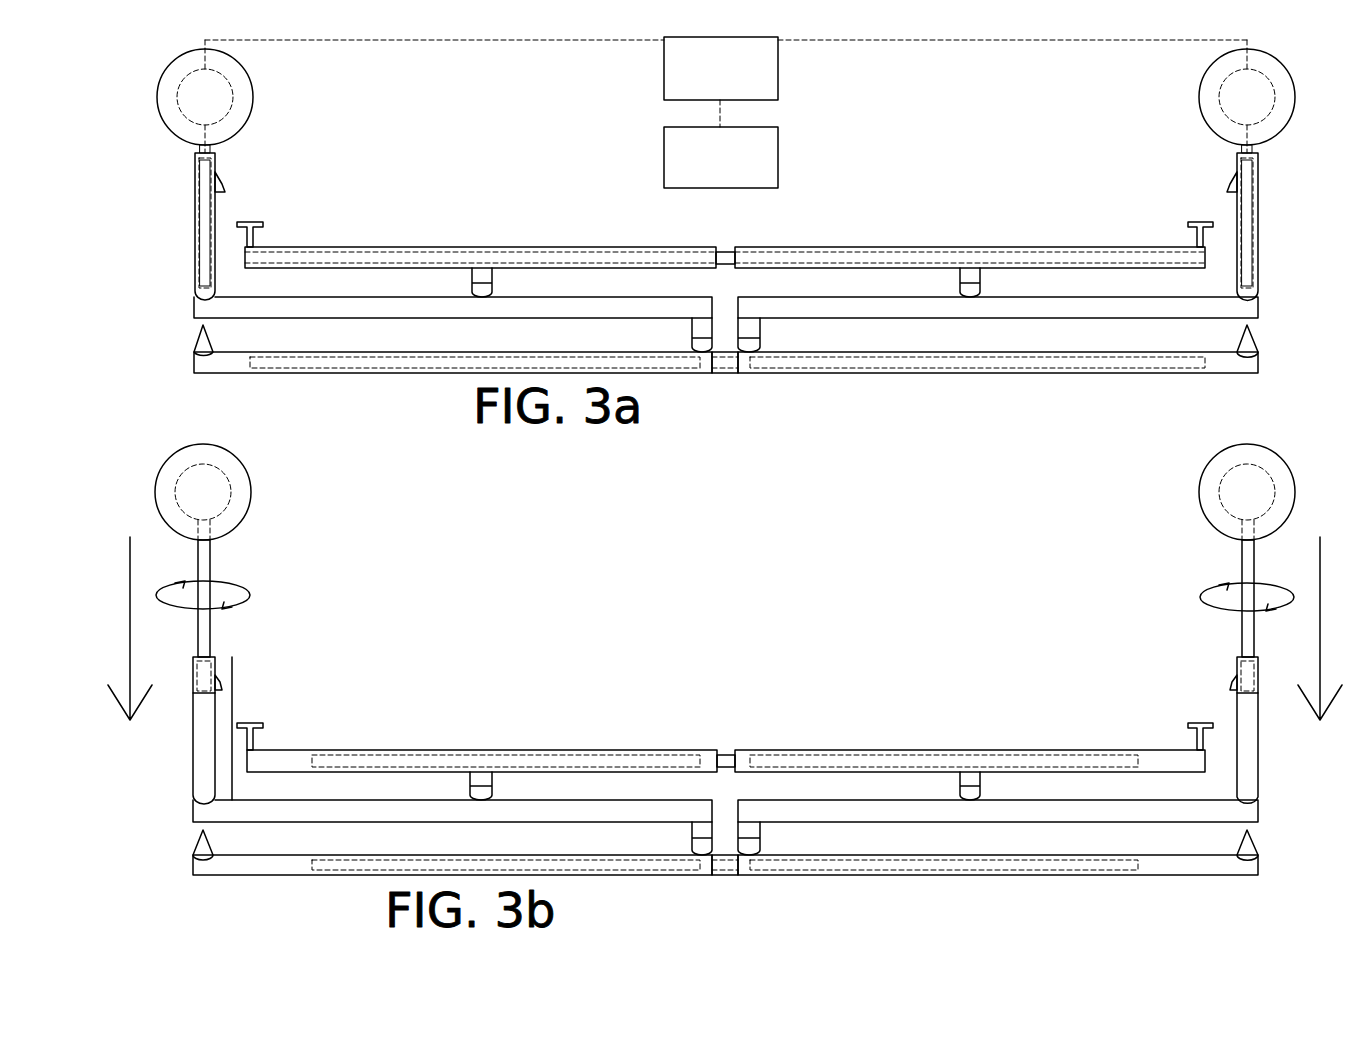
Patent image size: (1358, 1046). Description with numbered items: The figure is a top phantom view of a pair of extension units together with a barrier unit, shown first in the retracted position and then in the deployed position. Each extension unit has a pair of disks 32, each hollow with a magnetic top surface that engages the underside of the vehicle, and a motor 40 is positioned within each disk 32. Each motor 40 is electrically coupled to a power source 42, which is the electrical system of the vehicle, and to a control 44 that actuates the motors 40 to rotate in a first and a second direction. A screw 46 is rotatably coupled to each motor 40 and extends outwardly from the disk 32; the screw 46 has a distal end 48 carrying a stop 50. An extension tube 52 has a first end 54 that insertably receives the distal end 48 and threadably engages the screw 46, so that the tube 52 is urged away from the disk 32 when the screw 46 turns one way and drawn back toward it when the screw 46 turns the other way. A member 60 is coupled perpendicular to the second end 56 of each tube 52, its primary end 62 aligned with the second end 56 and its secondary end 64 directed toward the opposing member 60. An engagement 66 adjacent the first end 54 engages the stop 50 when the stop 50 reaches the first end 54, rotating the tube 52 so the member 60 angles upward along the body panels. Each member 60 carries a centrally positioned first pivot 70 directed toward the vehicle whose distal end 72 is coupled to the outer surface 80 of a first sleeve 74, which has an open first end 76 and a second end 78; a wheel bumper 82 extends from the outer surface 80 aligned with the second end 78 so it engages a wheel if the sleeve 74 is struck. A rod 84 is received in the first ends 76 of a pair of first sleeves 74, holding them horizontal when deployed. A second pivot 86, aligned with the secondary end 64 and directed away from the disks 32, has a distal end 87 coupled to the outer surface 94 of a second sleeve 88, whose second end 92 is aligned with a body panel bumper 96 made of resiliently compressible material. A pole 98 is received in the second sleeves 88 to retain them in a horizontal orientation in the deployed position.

In FIG. 3A, the disk 32 is at (250, 115).
In FIG. 3B, the disk 32 is at (250, 510).
In FIG. 3A, the motor 40 is at (175, 97).
In FIG. 3B, the motor 40 is at (175, 492).
In FIG. 3A, the power source 42 is at (664, 82).
In FIG. 3A, the control 44 is at (778, 150).
In FIG. 3A, the screw 46 is at (200, 228).
In FIG. 3B, the screw 46 is at (210, 565).
In FIG. 3B, the distal end 48 is at (210, 700).
In FIG. 3B, the stop 50 is at (200, 678).
In FIG. 3A, the extension tube 52 is at (195, 270).
In FIG. 3B, the extension tube 52 is at (193, 778).
In FIG. 3B, the first end 54 is at (210, 655).
In FIG. 3B, the second end 56 is at (215, 805).
In FIG. 3A, the member 60 is at (300, 297).
In FIG. 3B, the member 60 is at (262, 822).
In FIG. 3A, the primary end 62 is at (194, 320).
In FIG. 3B, the primary end 62 is at (193, 822).
In FIG. 3A, the secondary end 64 is at (712, 300).
In FIG. 3B, the secondary end 64 is at (712, 805).
In FIG. 3A, the engagement 66 is at (225, 188).
In FIG. 3A, the first pivot 70 is at (492, 283).
In FIG. 3B, the first pivot 70 is at (492, 786).
In FIG. 3A, the distal end 72 is at (478, 270).
In FIG. 3B, the distal end 72 is at (478, 772).
In FIG. 3A, the first sleeve 74 is at (568, 247).
In FIG. 3B, the first sleeve 74 is at (330, 750).
In FIG. 3B, the first end 76 is at (726, 755).
In FIG. 3B, the second end 78 is at (1210, 760).
In FIG. 3B, the outer surface 80 is at (1160, 758).
In FIG. 3A, the wheel bumper 82 is at (263, 222).
In FIG. 3B, the wheel bumper 82 is at (263, 723).
In FIG. 3A, the rod 84 is at (722, 252).
In FIG. 3A, the second pivot 86 is at (738, 352).
In FIG. 3B, the second pivot 86 is at (738, 855).
In FIG. 3A, the distal end 87 is at (690, 352).
In FIG. 3B, the distal end 87 is at (690, 855).
In FIG. 3A, the second sleeve 88 is at (340, 373).
In FIG. 3B, the second sleeve 88 is at (612, 875).
In FIG. 3B, the second end 92 is at (193, 870).
In FIG. 3A, the outer surface 94 is at (230, 358).
In FIG. 3B, the outer surface 94 is at (325, 862).
In FIG. 3A, the body panel bumper 96 is at (213, 340).
In FIG. 3B, the body panel bumper 96 is at (1250, 840).
In FIG. 3A, the pole 98 is at (1068, 360).
In FIG. 3B, the pole 98 is at (1188, 870).